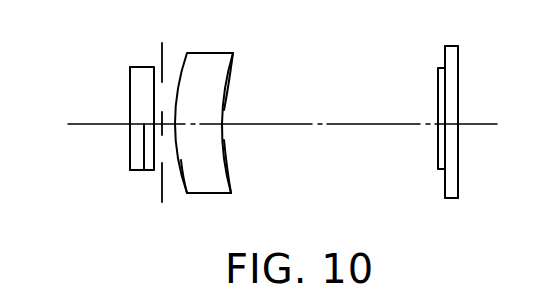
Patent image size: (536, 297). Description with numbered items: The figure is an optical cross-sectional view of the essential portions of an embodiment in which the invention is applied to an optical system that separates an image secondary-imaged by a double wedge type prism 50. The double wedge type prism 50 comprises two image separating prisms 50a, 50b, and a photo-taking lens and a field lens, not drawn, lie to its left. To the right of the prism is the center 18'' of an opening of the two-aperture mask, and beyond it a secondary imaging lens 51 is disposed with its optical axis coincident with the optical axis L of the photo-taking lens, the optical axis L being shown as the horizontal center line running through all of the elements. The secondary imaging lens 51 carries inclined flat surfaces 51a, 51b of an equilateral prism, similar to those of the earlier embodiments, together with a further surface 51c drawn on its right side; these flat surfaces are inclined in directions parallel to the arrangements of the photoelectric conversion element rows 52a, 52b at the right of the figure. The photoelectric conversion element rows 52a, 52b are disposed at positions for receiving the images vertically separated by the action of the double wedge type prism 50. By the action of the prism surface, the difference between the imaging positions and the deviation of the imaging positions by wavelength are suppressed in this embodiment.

The double wedge type prism 50 is at (139, 67).
The image separating prism 50a is at (130, 90).
The image separating prism 50b is at (130, 158).
The center of opening of two-aperture mask 18'' is at (188, 102).
The secondary imaging lens 51 is at (209, 60).
The inclined flat surface 51a is at (182, 176).
The inclined flat surface 51b is at (229, 85).
The lens surface portion 51c is at (229, 170).
The photoelectric conversion element row 52a is at (438, 82).
The photoelectric conversion element row 52b is at (451, 122).
The optical axis L is at (475, 118).